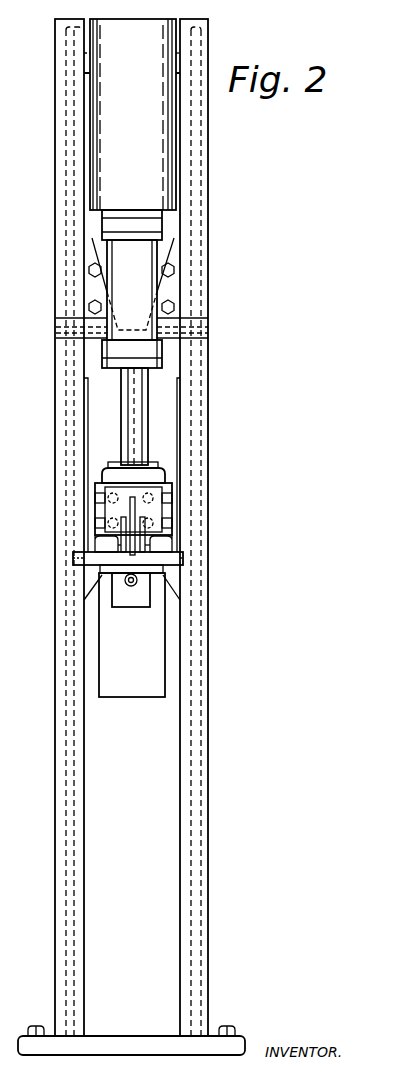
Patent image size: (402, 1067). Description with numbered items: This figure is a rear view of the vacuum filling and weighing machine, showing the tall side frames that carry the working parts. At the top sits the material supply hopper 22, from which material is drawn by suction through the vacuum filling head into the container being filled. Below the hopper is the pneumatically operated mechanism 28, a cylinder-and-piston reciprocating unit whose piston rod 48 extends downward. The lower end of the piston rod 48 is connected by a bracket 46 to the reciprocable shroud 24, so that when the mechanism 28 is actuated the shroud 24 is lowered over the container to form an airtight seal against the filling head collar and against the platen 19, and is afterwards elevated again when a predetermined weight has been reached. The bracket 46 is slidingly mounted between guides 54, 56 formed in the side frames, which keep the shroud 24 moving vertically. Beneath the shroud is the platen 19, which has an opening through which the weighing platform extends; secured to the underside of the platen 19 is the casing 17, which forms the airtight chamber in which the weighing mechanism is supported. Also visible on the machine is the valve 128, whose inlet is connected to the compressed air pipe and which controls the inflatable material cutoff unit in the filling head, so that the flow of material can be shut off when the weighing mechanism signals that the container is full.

The material supply hopper 22 is at (170, 147).
The pneumatically operated mechanism 28 is at (163, 290).
The piston rod 48 is at (140, 393).
The guide 54 is at (108, 403).
The guide 56 is at (177, 425).
The reciprocable shroud 24 is at (165, 470).
The bracket 46 is at (162, 485).
The platen 19 is at (160, 562).
The valve 128 is at (123, 608).
The casing 17 is at (133, 697).